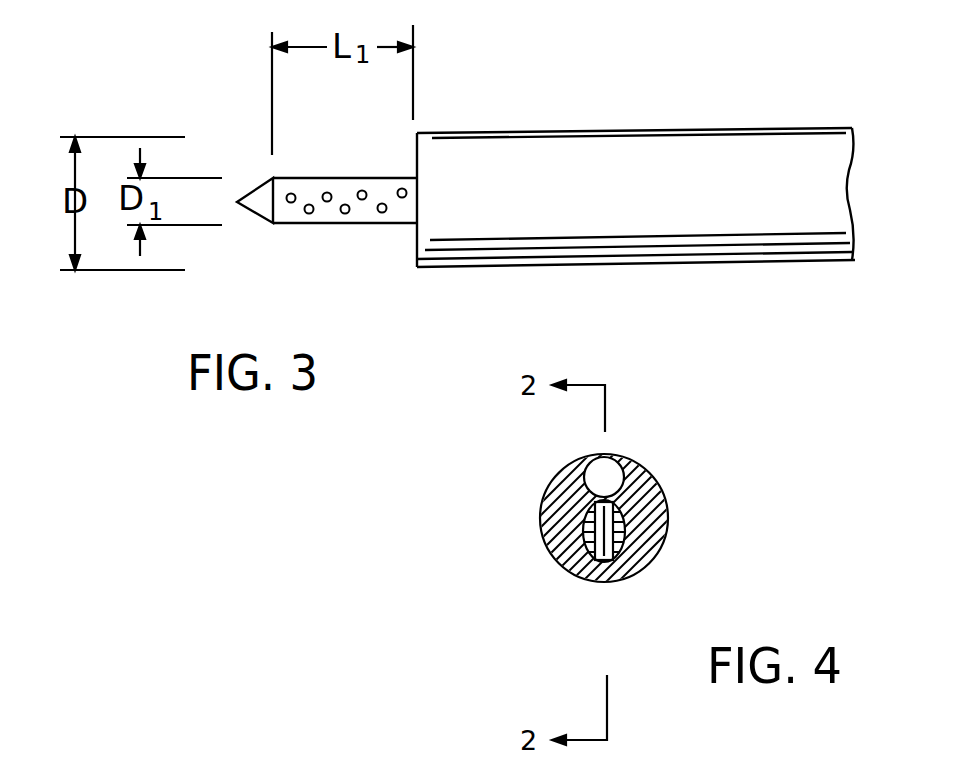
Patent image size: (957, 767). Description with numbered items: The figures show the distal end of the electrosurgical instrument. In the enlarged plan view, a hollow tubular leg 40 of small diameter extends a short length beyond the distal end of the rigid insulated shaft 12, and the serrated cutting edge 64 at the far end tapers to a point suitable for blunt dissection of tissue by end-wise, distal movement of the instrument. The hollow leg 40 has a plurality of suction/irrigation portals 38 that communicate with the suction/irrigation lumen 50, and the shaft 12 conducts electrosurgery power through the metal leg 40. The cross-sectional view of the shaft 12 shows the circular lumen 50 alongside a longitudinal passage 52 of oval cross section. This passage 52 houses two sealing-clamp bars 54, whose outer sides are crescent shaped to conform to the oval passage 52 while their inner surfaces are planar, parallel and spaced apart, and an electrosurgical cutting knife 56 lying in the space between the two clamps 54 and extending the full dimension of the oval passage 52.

In FIG. 4, the shaft 12 is at (667, 508).
In FIG. 3, the suction/irrigation portals 38 is at (379, 213).
In FIG. 3, the hollow tubular leg 40 is at (327, 178).
In FIG. 4, the suction/irrigation lumen 50 is at (605, 478).
In FIG. 4, the longitudinal passage 52 is at (583, 524).
In FIG. 4, the sealing-clamp bars 54 is at (623, 560).
In FIG. 4, the electrosurgical cutting knife 56 is at (604, 545).
In FIG. 3, the serrated cutting edge 64 is at (237, 202).